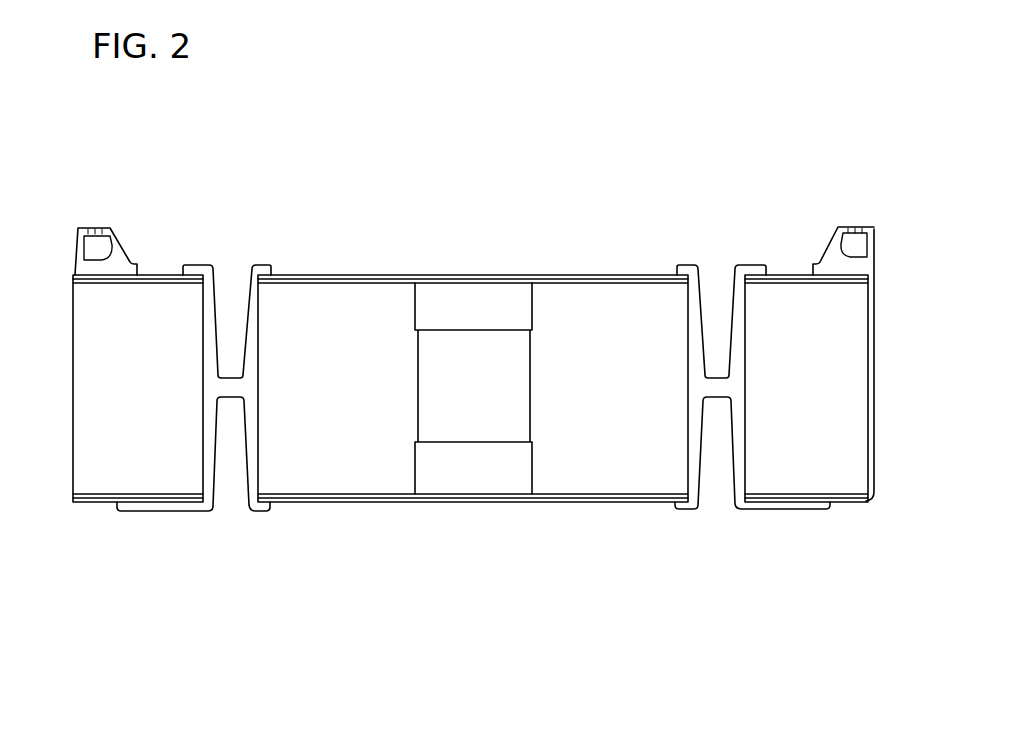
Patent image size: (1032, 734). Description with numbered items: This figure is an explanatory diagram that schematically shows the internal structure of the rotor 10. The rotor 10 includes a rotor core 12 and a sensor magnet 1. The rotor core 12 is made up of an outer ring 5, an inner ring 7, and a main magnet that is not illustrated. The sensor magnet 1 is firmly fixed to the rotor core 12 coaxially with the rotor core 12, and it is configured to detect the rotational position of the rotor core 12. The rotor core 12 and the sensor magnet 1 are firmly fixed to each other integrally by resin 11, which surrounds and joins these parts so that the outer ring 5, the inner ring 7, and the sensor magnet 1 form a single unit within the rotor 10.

The sensor magnet 1 is at (103, 250).
The outer ring 5 is at (158, 478).
The inner ring 7 is at (292, 473).
The rotor 10 is at (698, 188).
The resin 11 is at (130, 262).
The rotor core 12 is at (283, 593).